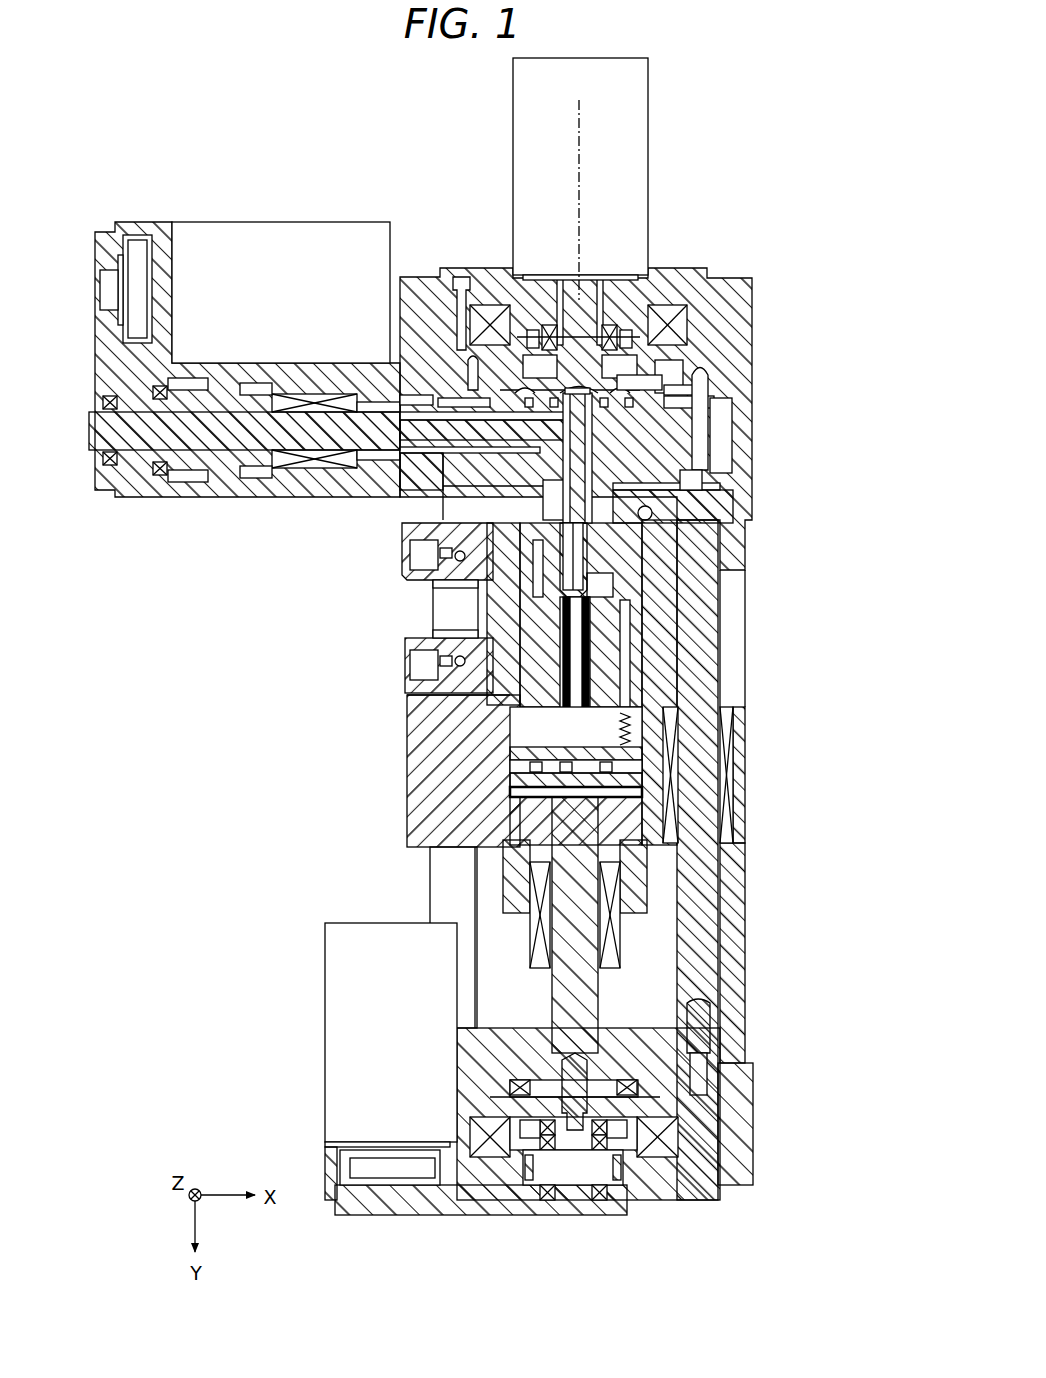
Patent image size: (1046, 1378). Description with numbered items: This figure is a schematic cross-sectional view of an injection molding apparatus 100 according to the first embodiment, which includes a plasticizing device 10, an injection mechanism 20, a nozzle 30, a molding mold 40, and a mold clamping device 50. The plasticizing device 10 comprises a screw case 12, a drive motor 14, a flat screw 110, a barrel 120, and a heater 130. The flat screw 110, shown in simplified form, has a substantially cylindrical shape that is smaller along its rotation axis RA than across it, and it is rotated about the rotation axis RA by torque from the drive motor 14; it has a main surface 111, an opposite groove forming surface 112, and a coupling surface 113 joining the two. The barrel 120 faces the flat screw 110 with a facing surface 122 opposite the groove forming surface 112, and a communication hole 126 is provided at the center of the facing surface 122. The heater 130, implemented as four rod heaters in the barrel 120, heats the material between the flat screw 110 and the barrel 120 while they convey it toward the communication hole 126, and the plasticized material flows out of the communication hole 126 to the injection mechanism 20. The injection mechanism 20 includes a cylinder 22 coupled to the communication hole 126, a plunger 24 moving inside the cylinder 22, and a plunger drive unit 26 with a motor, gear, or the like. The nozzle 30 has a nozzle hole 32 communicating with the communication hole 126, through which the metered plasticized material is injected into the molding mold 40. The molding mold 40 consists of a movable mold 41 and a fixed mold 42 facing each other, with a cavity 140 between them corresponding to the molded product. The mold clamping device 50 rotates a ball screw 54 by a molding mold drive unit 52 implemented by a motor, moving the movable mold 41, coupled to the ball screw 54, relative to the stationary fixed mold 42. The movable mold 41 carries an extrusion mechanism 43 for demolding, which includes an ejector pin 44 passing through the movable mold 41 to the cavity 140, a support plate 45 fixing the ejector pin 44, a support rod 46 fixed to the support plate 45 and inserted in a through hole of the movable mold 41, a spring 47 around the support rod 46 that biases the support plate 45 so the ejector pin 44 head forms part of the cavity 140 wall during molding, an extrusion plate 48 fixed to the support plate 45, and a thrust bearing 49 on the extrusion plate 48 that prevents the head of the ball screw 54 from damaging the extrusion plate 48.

The injection molding apparatus 100 is at (749, 120).
The plasticizing device 10 is at (748, 263).
The screw case 12 is at (722, 297).
The drive motor 14 is at (535, 147).
The rotation axis RA is at (575, 226).
The coupling surface 113 is at (464, 297).
The main surface 111 is at (630, 360).
The flat screw 110 is at (625, 378).
The facing surface 122 is at (700, 392).
The groove forming surface 112 is at (700, 403).
The barrel 120 is at (708, 420).
The heater 130 is at (735, 440).
The communication hole 126 is at (665, 483).
The nozzle hole 32 is at (605, 540).
The nozzle 30 is at (660, 570).
The injection mechanism 20 is at (212, 515).
The cylinder 22 is at (397, 497).
The plunger 24 is at (250, 430).
The plunger drive unit 26 is at (287, 257).
The molding mold 40 is at (346, 596).
The movable mold 41 is at (513, 613).
The fixed mold 42 is at (513, 585).
The extrusion mechanism 43 is at (397, 752).
The ejector pin 44 is at (555, 722).
The support plate 45 is at (637, 753).
The support rod 46 is at (627, 685).
The spring 47 is at (640, 715).
The extrusion plate 48 is at (627, 780).
The thrust bearing 49 is at (630, 793).
The cavity 140 is at (610, 623).
The mold clamping device 50 is at (336, 911).
The molding mold drive unit 52 is at (362, 1015).
The ball screw 54 is at (580, 985).